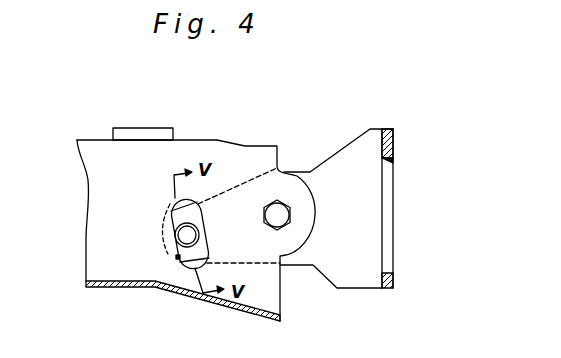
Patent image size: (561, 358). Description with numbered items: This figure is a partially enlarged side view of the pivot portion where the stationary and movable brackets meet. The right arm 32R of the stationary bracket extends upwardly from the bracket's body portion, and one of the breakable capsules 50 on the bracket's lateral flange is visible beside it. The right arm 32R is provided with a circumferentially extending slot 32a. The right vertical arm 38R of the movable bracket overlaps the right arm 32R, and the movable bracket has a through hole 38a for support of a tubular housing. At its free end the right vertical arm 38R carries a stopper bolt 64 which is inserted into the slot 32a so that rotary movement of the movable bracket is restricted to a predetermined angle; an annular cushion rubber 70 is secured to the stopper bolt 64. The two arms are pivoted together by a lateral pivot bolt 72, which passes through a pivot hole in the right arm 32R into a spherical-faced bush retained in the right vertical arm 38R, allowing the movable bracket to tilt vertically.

The right arm 32R is at (272, 299).
The circumferentially extending slot 32a is at (177, 258).
The right vertical arm 38R is at (353, 140).
The through hole 38a is at (393, 160).
The breakable capsule 50 is at (143, 128).
The stopper bolt 64 is at (172, 223).
The annular cushion rubber 70 is at (183, 235).
The lateral pivot bolt 72 is at (281, 202).